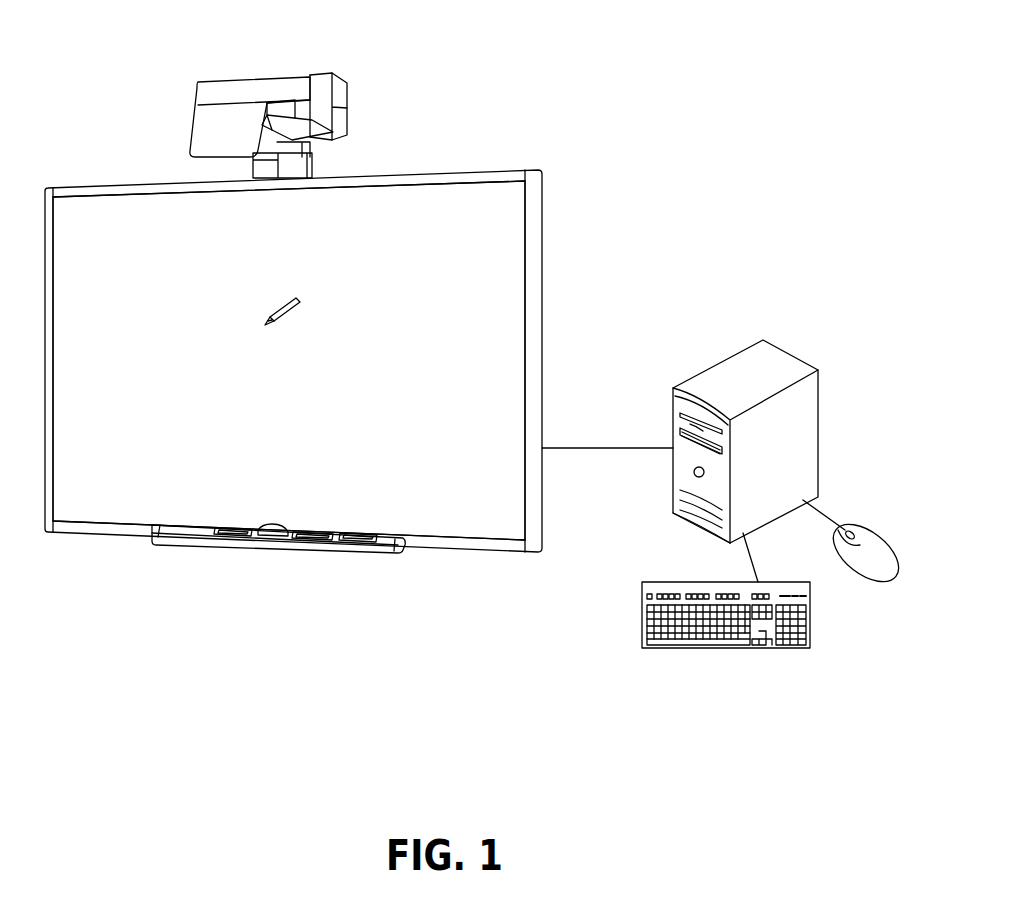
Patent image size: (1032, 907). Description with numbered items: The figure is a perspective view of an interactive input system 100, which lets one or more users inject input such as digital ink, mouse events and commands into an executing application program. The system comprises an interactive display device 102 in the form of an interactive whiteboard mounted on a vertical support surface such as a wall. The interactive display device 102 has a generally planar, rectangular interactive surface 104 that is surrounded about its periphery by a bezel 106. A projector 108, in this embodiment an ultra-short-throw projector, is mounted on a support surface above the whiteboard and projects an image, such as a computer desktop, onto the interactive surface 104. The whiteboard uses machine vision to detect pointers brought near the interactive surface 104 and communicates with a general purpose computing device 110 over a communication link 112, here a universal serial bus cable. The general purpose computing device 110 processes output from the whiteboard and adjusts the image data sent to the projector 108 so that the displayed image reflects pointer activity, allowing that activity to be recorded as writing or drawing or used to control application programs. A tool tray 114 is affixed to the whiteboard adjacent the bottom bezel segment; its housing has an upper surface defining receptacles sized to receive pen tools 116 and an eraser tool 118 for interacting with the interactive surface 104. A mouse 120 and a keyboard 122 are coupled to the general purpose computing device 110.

The interactive input system 100 is at (762, 113).
The interactive display device 102 is at (558, 193).
The interactive surface 104 is at (493, 242).
The bezel 106 is at (532, 333).
The projector 108 is at (235, 97).
The general purpose computing device 110 is at (775, 343).
The communication link 112 is at (586, 450).
The tool tray 114 is at (395, 555).
The pen tools 116 is at (318, 540).
The eraser tool 118 is at (270, 534).
The mouse 120 is at (857, 528).
The keyboard 122 is at (810, 617).